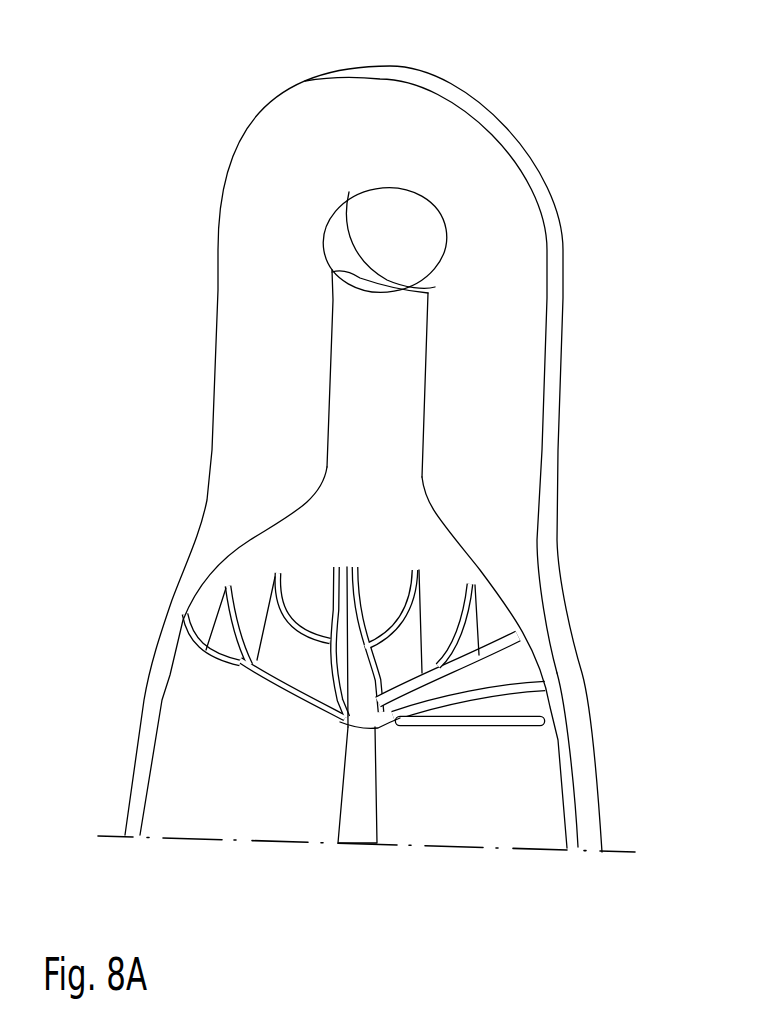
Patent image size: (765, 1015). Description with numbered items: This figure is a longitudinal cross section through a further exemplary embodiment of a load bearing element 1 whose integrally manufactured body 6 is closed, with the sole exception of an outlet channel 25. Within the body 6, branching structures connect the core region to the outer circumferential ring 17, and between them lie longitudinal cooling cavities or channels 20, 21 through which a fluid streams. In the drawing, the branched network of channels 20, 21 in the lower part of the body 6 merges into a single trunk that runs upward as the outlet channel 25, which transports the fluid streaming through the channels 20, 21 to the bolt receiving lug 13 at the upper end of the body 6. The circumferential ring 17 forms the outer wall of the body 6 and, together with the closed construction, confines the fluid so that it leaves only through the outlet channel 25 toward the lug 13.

The load bearing element 1 is at (631, 93).
The body 6 is at (512, 452).
The bolt receiving lug 13 is at (408, 252).
The outer circumferential ring 17 is at (568, 782).
The cooling channel 20 is at (456, 623).
The cooling channel 21 is at (398, 612).
The outlet channel 25 is at (390, 452).